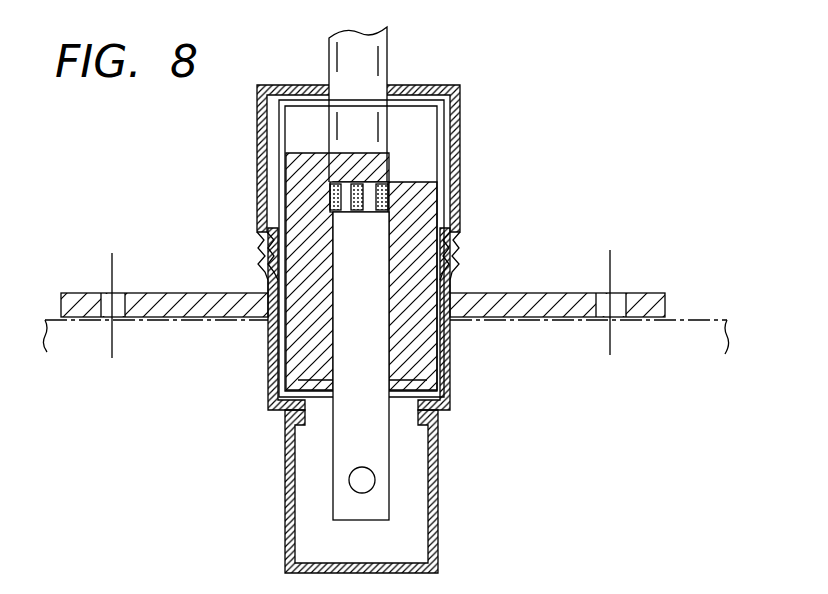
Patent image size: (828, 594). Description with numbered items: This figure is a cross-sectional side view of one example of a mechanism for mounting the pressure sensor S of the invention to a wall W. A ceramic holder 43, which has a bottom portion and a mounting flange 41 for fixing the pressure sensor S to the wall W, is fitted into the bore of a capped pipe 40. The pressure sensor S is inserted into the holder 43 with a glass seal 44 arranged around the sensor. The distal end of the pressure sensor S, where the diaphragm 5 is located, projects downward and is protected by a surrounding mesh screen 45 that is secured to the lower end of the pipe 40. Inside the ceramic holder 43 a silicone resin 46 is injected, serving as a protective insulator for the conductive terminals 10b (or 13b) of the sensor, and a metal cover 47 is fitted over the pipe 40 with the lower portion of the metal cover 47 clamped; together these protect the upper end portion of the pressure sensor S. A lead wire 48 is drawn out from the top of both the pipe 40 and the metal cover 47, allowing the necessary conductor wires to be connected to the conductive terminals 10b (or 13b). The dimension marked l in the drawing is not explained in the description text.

The lead wire 48 is at (388, 52).
The metal cover 47 is at (462, 112).
The silicone resin 46 is at (284, 203).
The conductive terminals 10b is at (467, 193).
The conductive terminals 13b is at (398, 196).
The length l is at (284, 180).
The mounting flange 41 is at (549, 300).
The wall W is at (708, 320).
The capped pipe 40 is at (270, 360).
The ceramic holder 43 is at (283, 401).
The glass seal 44 is at (432, 372).
The pressure sensor S is at (377, 450).
The diaphragm 5 is at (347, 483).
The mesh screen 45 is at (433, 545).